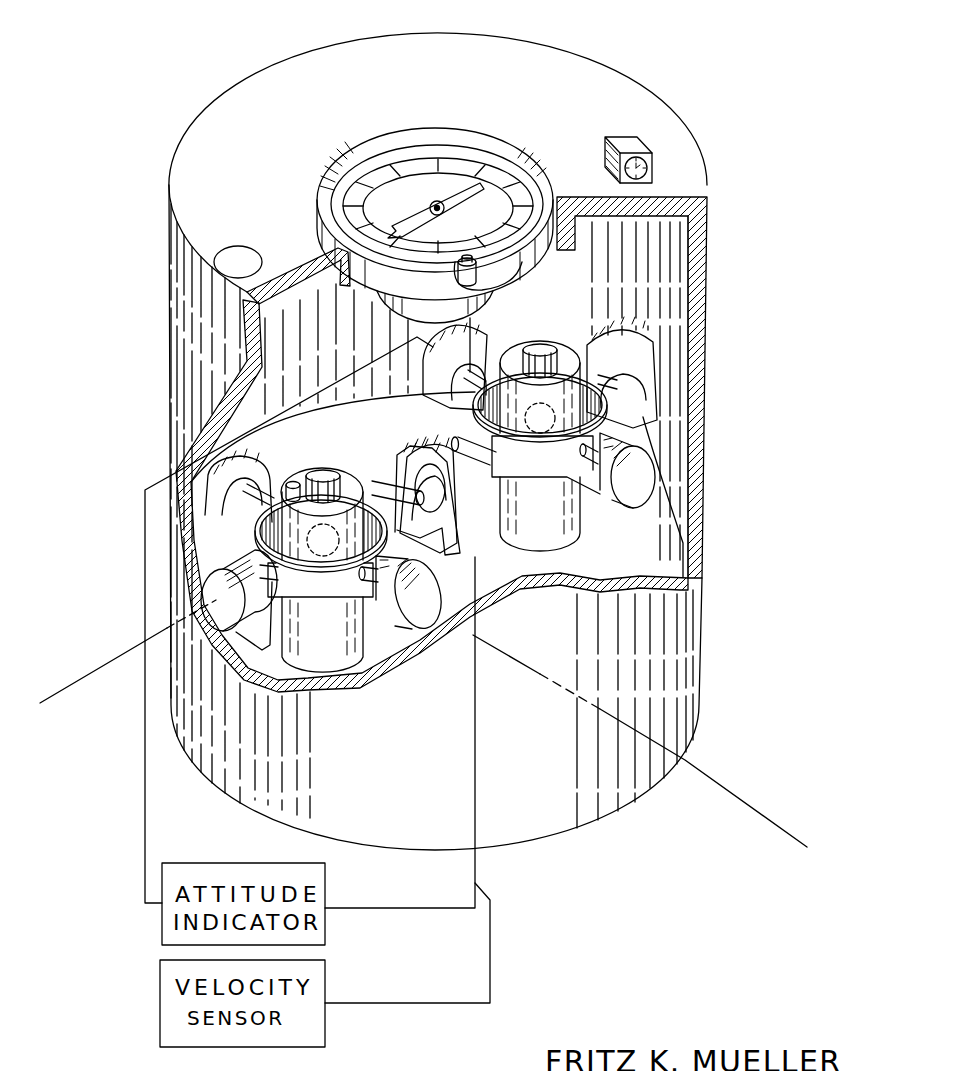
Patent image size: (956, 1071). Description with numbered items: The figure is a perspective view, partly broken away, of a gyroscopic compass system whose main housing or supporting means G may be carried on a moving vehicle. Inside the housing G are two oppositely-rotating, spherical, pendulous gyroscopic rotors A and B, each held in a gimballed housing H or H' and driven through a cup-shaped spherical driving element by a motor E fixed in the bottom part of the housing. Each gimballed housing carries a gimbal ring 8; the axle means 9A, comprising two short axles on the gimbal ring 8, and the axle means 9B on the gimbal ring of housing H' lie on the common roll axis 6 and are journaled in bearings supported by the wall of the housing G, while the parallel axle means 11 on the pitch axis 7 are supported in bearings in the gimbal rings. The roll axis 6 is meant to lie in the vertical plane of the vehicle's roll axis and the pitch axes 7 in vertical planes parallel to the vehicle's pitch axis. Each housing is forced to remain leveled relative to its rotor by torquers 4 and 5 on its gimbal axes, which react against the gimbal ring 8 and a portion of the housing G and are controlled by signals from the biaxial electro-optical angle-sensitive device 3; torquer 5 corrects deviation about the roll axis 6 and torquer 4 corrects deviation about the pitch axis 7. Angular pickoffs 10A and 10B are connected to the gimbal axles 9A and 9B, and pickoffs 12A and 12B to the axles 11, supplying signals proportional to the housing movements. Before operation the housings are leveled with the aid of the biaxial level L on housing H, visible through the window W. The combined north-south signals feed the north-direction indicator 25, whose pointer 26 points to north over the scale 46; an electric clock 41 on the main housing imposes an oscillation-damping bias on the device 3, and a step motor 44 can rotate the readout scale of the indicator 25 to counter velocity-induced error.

The scale 46 is at (447, 160).
The north-direction indicator 25 is at (326, 208).
The pointer 26 is at (460, 190).
The window W is at (237, 250).
The electric clock 41 is at (629, 146).
The step motor 44 is at (505, 275).
The gimballed housing H' is at (569, 340).
The axle means 11 is at (272, 495).
The angle-sensitive device 3 is at (322, 478).
The angular pickoff 12B is at (438, 362).
The torquer 5 is at (227, 611).
The angular pickoff 10B is at (428, 455).
The axle means 9B is at (465, 476).
The torquer 4 is at (455, 624).
The motor E is at (326, 638).
The spherical pendulous gyroscopic rotor B is at (540, 418).
The main housing G is at (703, 477).
The gimballed housing H is at (331, 445).
The biaxial level L is at (294, 482).
The axle means 9A is at (388, 481).
The angular pickoff 10A is at (407, 480).
The angular pickoff 12A is at (236, 526).
The spherical pendulous gyroscopic rotor A is at (323, 540).
The gimbal ring 8 is at (326, 592).
The roll axis 6 is at (80, 677).
The pitch axis 7 is at (735, 807).